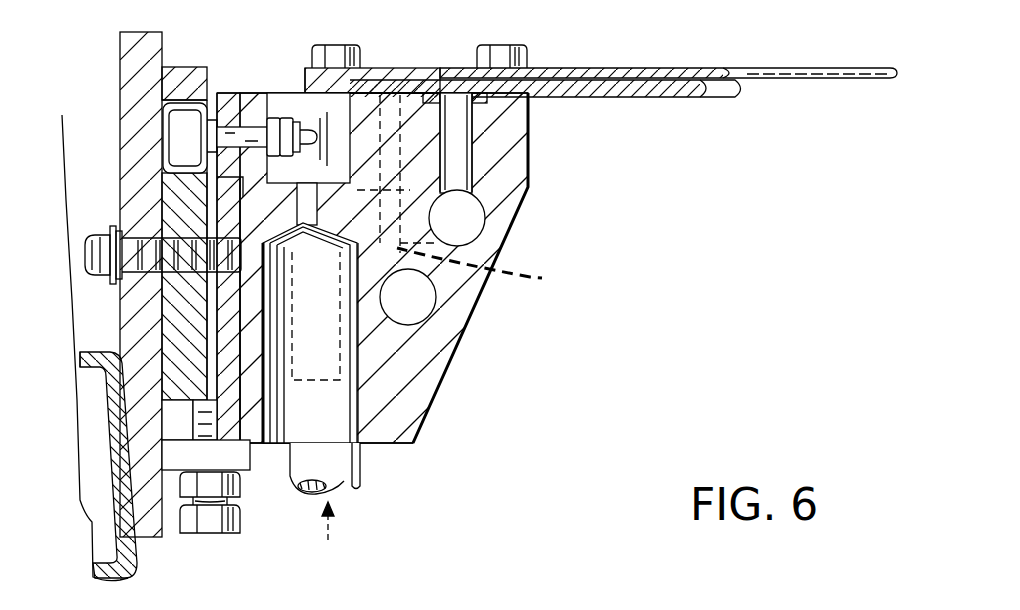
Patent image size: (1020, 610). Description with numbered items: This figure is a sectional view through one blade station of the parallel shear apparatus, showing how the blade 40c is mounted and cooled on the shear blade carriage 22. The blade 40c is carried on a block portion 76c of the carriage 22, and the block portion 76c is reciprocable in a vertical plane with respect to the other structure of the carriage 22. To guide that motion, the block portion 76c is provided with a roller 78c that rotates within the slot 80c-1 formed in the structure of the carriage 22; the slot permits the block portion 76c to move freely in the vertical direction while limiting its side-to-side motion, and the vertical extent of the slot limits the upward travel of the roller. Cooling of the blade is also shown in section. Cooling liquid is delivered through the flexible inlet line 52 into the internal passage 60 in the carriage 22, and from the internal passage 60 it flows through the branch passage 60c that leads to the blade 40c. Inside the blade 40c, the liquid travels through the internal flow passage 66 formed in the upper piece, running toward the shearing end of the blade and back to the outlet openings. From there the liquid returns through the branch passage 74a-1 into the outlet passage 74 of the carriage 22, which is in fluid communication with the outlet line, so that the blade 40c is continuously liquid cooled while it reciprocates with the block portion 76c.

The slot 80c-1 is at (176, 187).
The shear blade carriage 22 is at (188, 66).
The roller 78c is at (187, 118).
The internal flow passage 66 is at (605, 78).
The blade 40c is at (678, 68).
The branch passage 60c is at (458, 147).
The internal passage 60 is at (470, 224).
The branch passage 74a-1 is at (507, 272).
The outlet passage 74 is at (417, 298).
The block portion 76c is at (438, 384).
The inlet line 52 is at (362, 471).